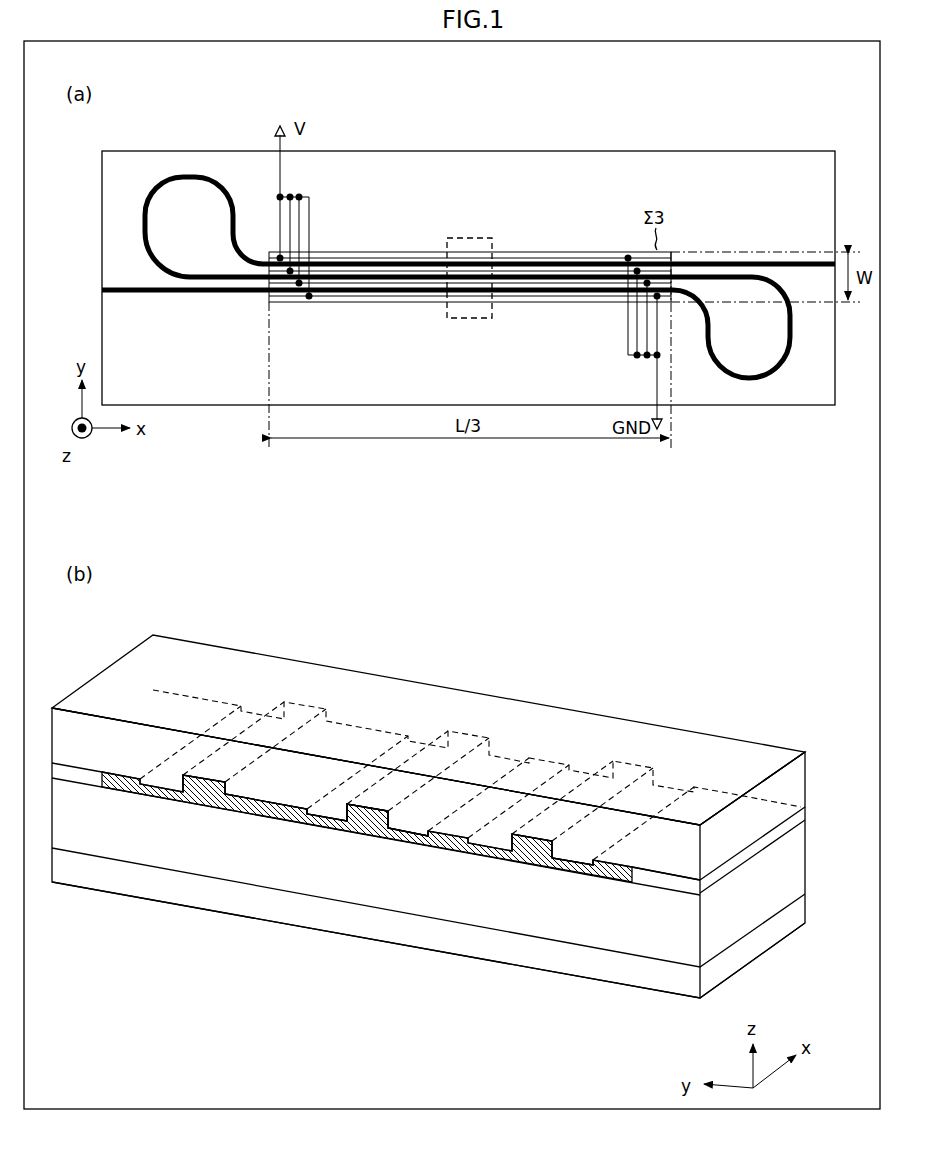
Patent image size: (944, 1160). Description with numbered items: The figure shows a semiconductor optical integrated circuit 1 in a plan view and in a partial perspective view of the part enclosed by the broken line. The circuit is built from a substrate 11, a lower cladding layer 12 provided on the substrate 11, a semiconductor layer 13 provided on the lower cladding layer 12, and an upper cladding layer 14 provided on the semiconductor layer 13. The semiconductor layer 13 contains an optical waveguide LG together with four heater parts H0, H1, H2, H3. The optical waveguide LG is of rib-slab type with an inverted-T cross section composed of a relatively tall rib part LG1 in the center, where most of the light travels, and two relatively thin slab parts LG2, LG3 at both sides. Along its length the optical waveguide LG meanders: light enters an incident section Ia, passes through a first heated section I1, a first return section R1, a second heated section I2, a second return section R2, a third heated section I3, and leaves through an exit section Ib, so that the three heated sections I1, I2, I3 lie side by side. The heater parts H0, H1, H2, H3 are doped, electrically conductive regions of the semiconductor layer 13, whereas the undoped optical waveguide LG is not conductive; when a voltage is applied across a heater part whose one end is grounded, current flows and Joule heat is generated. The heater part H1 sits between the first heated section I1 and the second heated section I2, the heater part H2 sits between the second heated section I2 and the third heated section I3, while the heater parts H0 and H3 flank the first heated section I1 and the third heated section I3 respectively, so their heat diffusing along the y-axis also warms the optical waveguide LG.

The semiconductor optical integrated circuit 1 is at (774, 151).
The substrate 11 is at (807, 908).
The lower cladding layer 12 is at (807, 862).
The semiconductor layer 13 is at (807, 812).
The upper cladding layer 14 is at (807, 773).
The optical waveguide LG is at (129, 290).
The rib part LG1 is at (368, 837).
The slab part LG2 is at (412, 847).
The slab part LG3 is at (317, 823).
The first return section R1 is at (790, 330).
The second return section R2 is at (151, 229).
The incident section Ia is at (190, 293).
The exit section Ib is at (746, 264).
The first heated section I1 is at (340, 304).
The second heated section I2 is at (401, 304).
The third heated section I3 is at (340, 254).
The heater part H0 is at (533, 304).
The heater part H1 is at (593, 304).
The heater part H2 is at (533, 252).
The heater part H3 is at (593, 252).